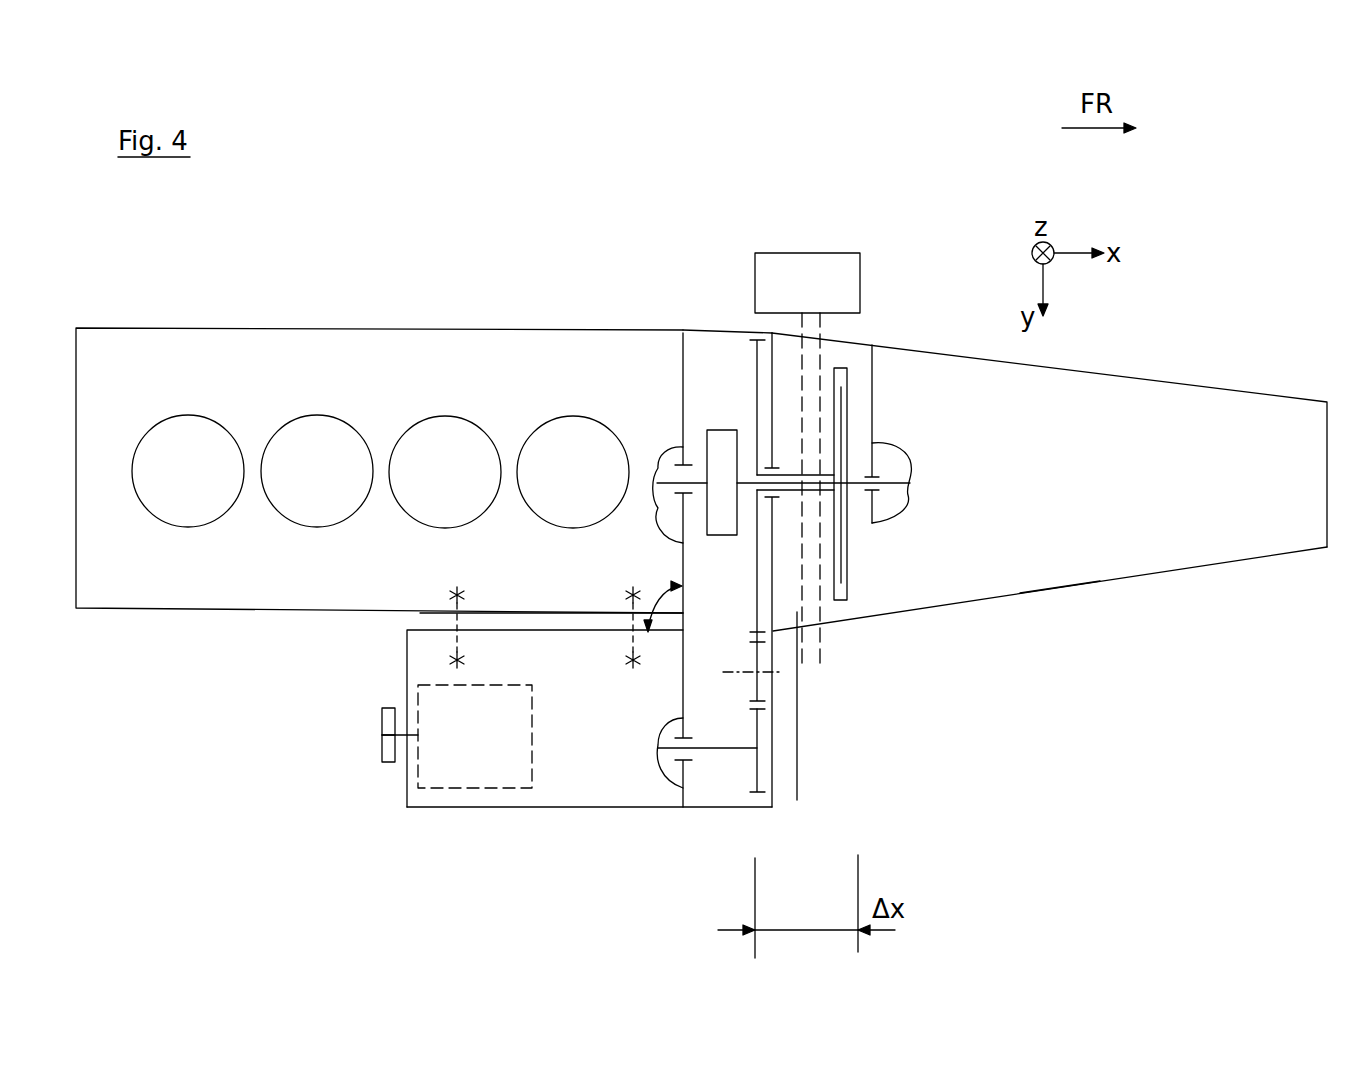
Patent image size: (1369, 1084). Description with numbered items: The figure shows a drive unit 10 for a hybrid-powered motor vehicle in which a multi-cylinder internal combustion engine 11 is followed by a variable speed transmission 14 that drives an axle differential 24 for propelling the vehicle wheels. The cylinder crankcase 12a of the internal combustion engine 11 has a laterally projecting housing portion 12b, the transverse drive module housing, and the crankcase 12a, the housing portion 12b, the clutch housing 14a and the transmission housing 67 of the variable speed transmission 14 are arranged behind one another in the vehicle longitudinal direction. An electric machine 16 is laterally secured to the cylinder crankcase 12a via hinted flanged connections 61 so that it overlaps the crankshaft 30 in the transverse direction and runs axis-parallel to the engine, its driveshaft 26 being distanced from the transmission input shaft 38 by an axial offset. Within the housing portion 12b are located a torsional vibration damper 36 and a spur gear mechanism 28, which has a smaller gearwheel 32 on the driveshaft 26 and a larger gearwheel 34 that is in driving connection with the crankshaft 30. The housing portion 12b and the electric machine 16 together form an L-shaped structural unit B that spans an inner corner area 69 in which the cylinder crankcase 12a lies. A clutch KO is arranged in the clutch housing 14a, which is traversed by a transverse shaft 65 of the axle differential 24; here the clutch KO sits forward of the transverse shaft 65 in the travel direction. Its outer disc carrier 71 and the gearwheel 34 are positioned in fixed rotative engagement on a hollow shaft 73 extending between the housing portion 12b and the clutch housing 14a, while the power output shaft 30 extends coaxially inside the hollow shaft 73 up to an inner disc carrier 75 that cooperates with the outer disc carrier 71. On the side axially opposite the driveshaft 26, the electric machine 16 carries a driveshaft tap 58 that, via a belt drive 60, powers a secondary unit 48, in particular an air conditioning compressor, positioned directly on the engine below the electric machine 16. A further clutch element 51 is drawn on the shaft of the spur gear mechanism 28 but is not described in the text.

The drive unit 10 is at (366, 158).
The internal combustion engine 11 is at (265, 402).
The cylinder crankcase 12a is at (252, 328).
The housing portion 12b is at (728, 332).
The variable speed transmission 14 is at (1170, 483).
The clutch housing 14a is at (853, 622).
The electric machine 16 is at (567, 808).
The axle differential 24 is at (768, 252).
The driveshaft 26 is at (728, 752).
The spur gear mechanism 28 is at (867, 730).
The crankshaft 30 is at (670, 463).
The smaller gearwheel 32 is at (760, 777).
The larger gearwheel 34 is at (758, 610).
The torsional vibration damper 36 is at (728, 430).
The transmission input shaft 38 is at (860, 477).
The secondary unit 48 is at (450, 790).
The clutch 51 is at (760, 701).
The driveshaft tap 58 is at (398, 763).
The belt drive 60 is at (372, 725).
The flanged connections 61 is at (455, 652).
The transverse shaft 65 is at (823, 331).
The transmission housing 67 is at (1060, 594).
The inner corner area 69 is at (660, 590).
The outer disc carrier 71 is at (842, 368).
The hollow shaft 73 is at (792, 493).
The inner disc carrier 75 is at (843, 412).
The clutch KO is at (977, 96).
The L-shaped structural unit B is at (655, 898).